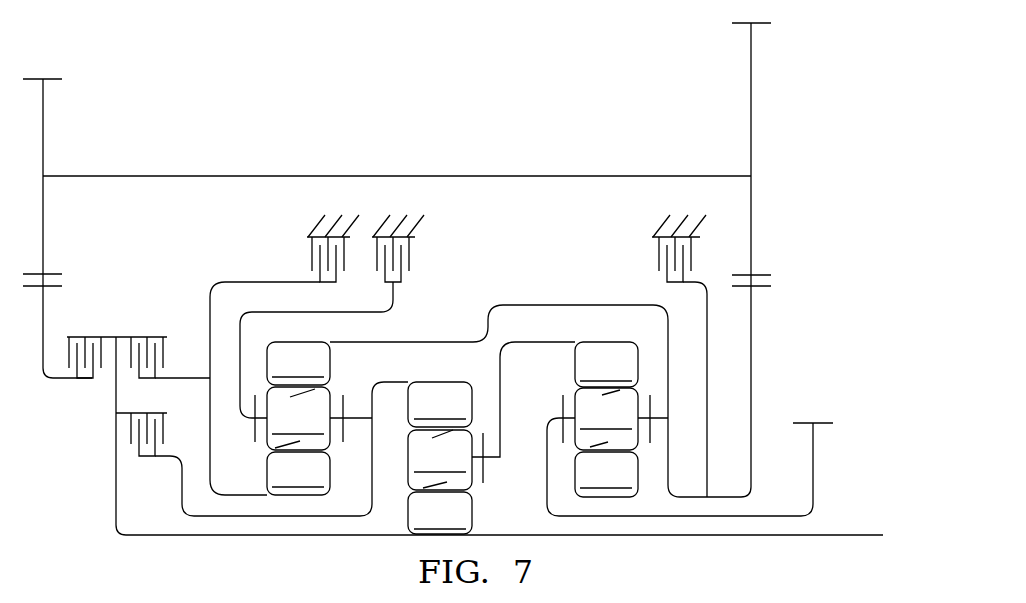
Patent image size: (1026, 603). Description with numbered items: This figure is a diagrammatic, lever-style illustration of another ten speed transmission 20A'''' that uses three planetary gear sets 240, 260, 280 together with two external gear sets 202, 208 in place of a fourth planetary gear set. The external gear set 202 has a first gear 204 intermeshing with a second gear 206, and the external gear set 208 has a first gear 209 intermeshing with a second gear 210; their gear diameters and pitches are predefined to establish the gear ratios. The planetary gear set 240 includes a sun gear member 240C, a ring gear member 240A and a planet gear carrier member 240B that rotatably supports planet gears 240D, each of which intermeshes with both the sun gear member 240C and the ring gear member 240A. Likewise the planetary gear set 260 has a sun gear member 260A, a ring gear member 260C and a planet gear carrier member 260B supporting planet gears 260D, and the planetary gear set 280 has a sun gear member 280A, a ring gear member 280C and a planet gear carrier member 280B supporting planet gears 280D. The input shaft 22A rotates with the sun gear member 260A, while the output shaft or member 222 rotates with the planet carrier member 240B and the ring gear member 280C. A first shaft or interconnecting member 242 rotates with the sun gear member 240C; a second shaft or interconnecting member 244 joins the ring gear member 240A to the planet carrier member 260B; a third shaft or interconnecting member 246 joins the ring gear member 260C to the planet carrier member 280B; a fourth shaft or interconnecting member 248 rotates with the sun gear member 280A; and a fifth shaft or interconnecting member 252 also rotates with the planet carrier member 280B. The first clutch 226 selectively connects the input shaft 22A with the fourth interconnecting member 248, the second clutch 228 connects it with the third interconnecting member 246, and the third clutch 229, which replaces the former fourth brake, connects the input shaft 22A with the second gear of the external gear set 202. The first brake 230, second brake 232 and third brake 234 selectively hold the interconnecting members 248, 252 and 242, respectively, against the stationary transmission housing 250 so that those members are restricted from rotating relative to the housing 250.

The ten speed transmission 20A'''' is at (451, 293).
The external gear set 202 is at (95, 110).
The first gear 204 is at (44, 150).
The second gear 206 is at (44, 332).
The external gear set 208 is at (818, 162).
The first gear 209 is at (750, 150).
The second gear 210 is at (752, 322).
The output shaft or member 222 is at (413, 330).
The input shaft 22A is at (115, 490).
The first clutch 226 is at (130, 350).
The second clutch 228 is at (165, 438).
The third clutch 229 is at (44, 380).
The first brake 230 is at (310, 252).
The second brake 232 is at (413, 256).
The third brake 234 is at (655, 253).
The planetary gear set 240 is at (610, 500).
The ring gear member 240A is at (606, 364).
The planet gear carrier member 240B is at (557, 407).
The sun gear member 240C is at (606, 474).
The planet gears 240D is at (606, 419).
The first shaft or interconnecting member 242 is at (709, 365).
The second shaft or interconnecting member 244 is at (528, 341).
The third shaft or interconnecting member 246 is at (215, 518).
The fourth shaft or interconnecting member 248 is at (210, 310).
The transmission housing 250 is at (387, 220).
The fifth shaft or interconnecting member 252 is at (397, 292).
The planetary gear set 260 is at (404, 538).
The sun gear member 260A is at (440, 513).
The planet gear carrier member 260B is at (487, 473).
The ring gear member 260C is at (440, 404).
The planet gears 260D is at (440, 460).
The planetary gear set 280 is at (292, 500).
The sun gear member 280A is at (298, 473).
The planet gear carrier member 280B is at (348, 405).
The ring gear member 280C is at (298, 363).
The planet gears 280D is at (298, 418).